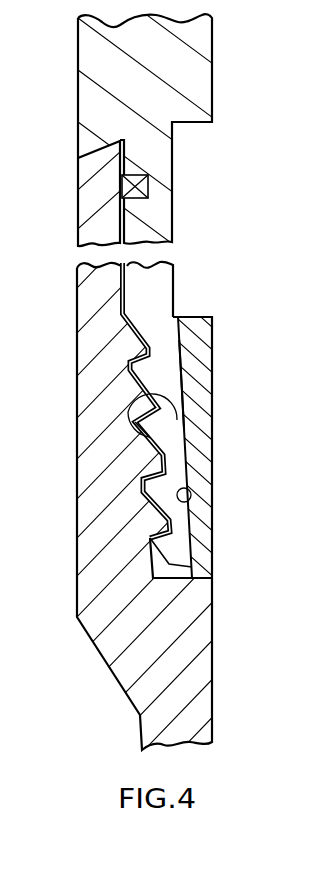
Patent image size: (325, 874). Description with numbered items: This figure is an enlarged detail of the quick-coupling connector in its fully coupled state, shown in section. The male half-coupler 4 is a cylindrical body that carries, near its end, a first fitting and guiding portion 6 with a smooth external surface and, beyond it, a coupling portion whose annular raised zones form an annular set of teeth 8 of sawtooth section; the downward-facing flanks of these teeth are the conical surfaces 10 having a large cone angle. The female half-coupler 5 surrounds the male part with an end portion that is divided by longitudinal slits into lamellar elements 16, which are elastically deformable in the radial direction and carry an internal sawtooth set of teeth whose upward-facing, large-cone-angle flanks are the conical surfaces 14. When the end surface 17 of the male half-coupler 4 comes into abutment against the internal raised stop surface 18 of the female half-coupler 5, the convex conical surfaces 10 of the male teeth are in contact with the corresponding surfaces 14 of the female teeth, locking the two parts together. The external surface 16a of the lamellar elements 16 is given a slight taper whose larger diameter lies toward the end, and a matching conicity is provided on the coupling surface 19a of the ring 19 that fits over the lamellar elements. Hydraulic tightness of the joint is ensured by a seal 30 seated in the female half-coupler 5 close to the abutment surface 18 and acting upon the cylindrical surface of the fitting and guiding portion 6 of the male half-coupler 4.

The female half-coupler 5 is at (193, 83).
The internal raised stop surface 18 is at (100, 142).
The end surface 17 is at (100, 156).
The seal 30 is at (148, 188).
The lamellar elements 16 is at (148, 300).
The first fitting and guiding portion 6 is at (90, 305).
The conical surfaces 14 is at (178, 384).
The annular set of teeth 8 is at (135, 401).
The external surface 16a is at (186, 431).
The ring 19 is at (200, 462).
The coupling surface 19a is at (190, 497).
The conical surfaces 10 is at (140, 436).
The male half-coupler 4 is at (182, 651).